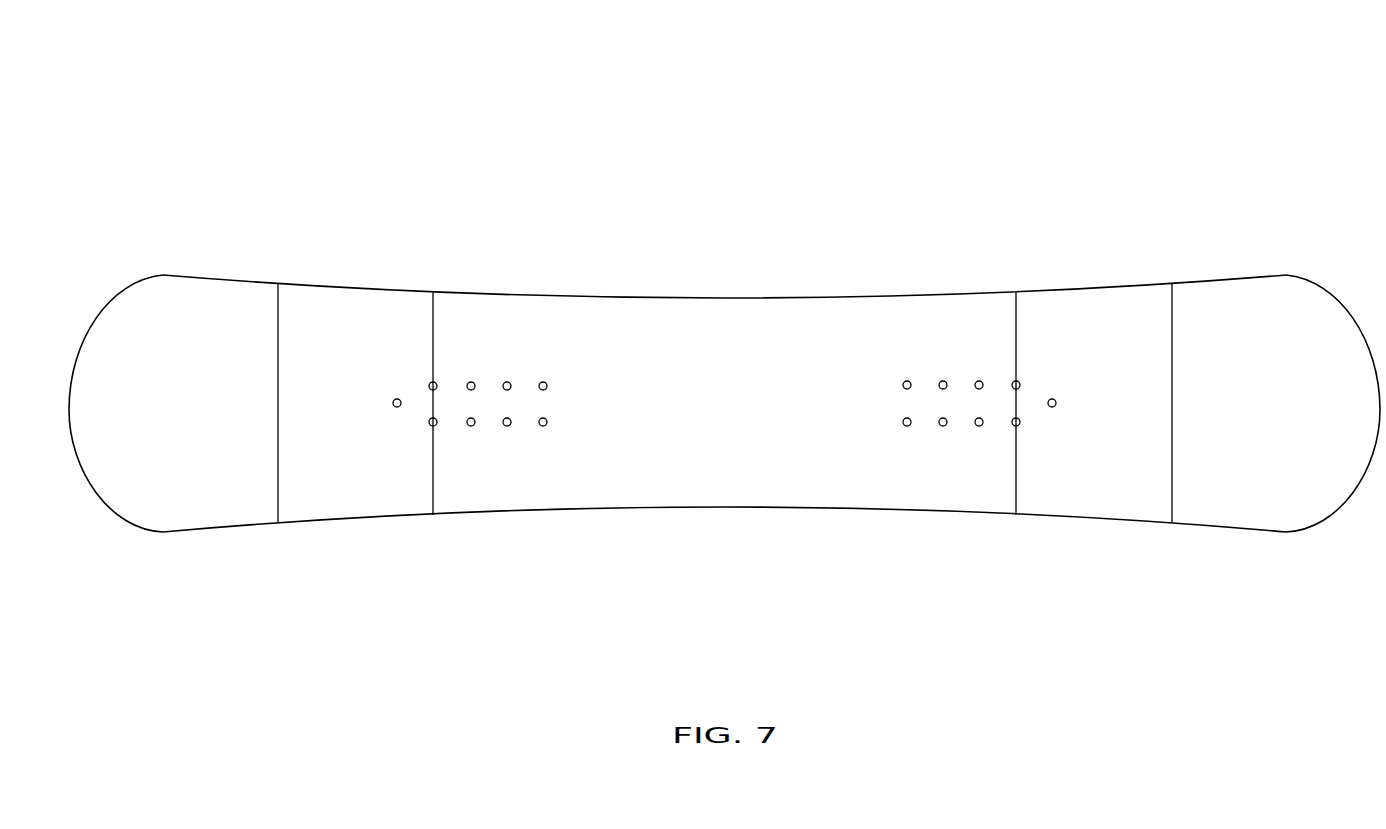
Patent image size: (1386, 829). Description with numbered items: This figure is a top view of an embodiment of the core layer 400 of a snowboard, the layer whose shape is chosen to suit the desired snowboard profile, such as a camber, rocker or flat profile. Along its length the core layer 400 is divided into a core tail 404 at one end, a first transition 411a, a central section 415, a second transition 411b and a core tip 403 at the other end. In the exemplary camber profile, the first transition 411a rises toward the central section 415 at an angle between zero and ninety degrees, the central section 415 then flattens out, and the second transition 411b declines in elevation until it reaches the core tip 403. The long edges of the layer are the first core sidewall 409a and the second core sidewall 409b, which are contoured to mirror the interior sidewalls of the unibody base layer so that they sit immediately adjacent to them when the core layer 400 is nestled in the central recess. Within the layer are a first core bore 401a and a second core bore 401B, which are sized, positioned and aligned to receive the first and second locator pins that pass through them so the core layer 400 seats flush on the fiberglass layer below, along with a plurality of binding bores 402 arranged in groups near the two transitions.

The core layer 400 is at (1076, 180).
The first core bore 401a is at (396, 400).
The second core bore 401B is at (1056, 405).
The binding bores 402 is at (978, 382).
The core tip 403 is at (1363, 400).
The core tail 404 is at (89, 393).
The first core sidewall 409a is at (958, 515).
The second core sidewall 409b is at (777, 297).
The first transition 411a is at (365, 503).
The second transition 411b is at (1122, 502).
The central section 415 is at (666, 437).